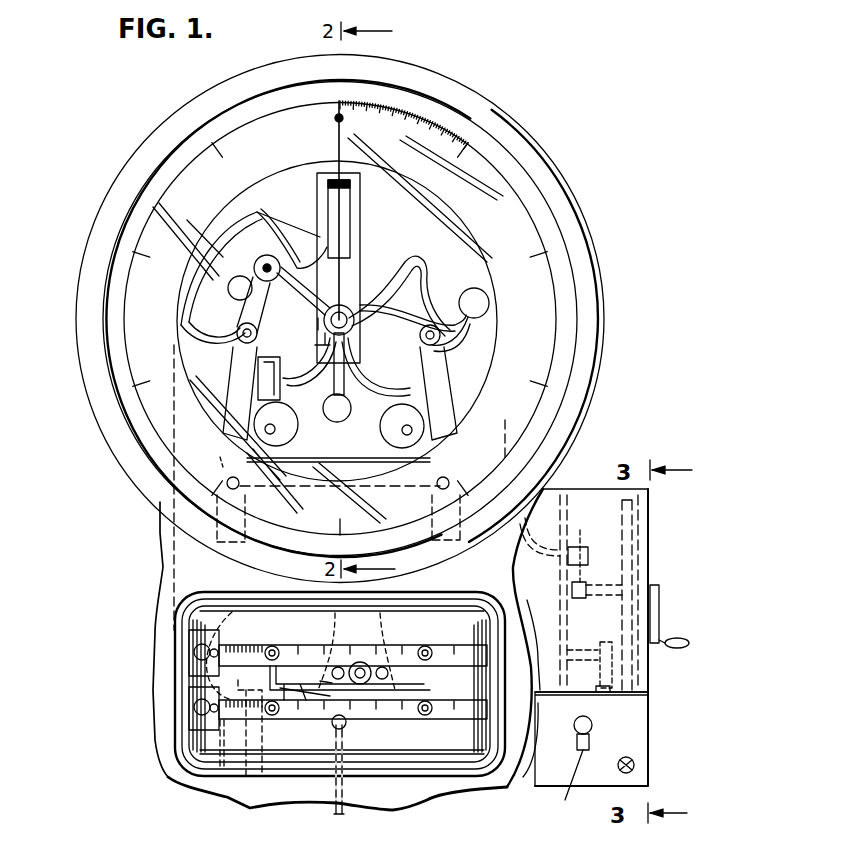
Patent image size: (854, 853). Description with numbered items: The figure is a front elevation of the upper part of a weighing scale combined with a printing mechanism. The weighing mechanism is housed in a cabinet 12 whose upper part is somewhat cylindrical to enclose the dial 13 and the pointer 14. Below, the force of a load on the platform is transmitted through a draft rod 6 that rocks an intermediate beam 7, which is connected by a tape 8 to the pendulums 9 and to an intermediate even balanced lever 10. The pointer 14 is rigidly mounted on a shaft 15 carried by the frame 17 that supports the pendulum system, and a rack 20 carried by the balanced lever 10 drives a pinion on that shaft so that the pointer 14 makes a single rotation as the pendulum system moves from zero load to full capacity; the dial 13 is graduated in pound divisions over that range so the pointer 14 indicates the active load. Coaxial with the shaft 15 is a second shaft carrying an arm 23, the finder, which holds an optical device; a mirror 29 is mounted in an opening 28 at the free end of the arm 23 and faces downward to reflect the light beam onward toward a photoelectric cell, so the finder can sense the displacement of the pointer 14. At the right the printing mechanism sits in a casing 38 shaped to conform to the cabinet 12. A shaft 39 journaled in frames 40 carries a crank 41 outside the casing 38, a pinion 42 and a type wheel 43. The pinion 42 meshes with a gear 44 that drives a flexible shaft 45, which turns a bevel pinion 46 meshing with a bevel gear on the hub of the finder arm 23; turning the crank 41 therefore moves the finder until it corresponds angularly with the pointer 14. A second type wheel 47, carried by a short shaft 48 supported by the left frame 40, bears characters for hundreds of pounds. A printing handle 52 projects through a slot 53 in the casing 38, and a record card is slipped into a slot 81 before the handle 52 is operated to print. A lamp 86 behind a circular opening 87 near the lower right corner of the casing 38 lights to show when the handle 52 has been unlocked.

The draft rod 6 is at (345, 812).
The intermediate beam 7 is at (312, 706).
The tape 8 is at (172, 560).
The pendulums 9 is at (290, 436).
The intermediate even balanced lever 10 is at (253, 235).
The cabinet 12 is at (156, 634).
The dial 13 is at (198, 178).
The pointer 14 is at (344, 277).
The shaft 15 is at (322, 338).
The frame 17 is at (418, 270).
The rack 20 is at (288, 382).
The arm 23 is at (360, 243).
The opening 28 is at (349, 219).
The mirror 29 is at (350, 190).
The casing 38 is at (594, 488).
The shaft 39 is at (600, 585).
The frames 40 is at (568, 500).
The crank 41 is at (689, 641).
The pinion 42 is at (579, 598).
The type wheel 43 is at (640, 560).
The gear 44 is at (581, 546).
The flexible shaft 45 is at (460, 398).
The bevel pinion 46 is at (468, 296).
The second type wheel 47 is at (596, 688).
The short shaft 48 is at (600, 688).
The printing handle 52 is at (590, 730).
The slot 53 is at (565, 784).
The slot 81 is at (545, 697).
The lamp 86 is at (634, 769).
The circular opening 87 is at (632, 762).